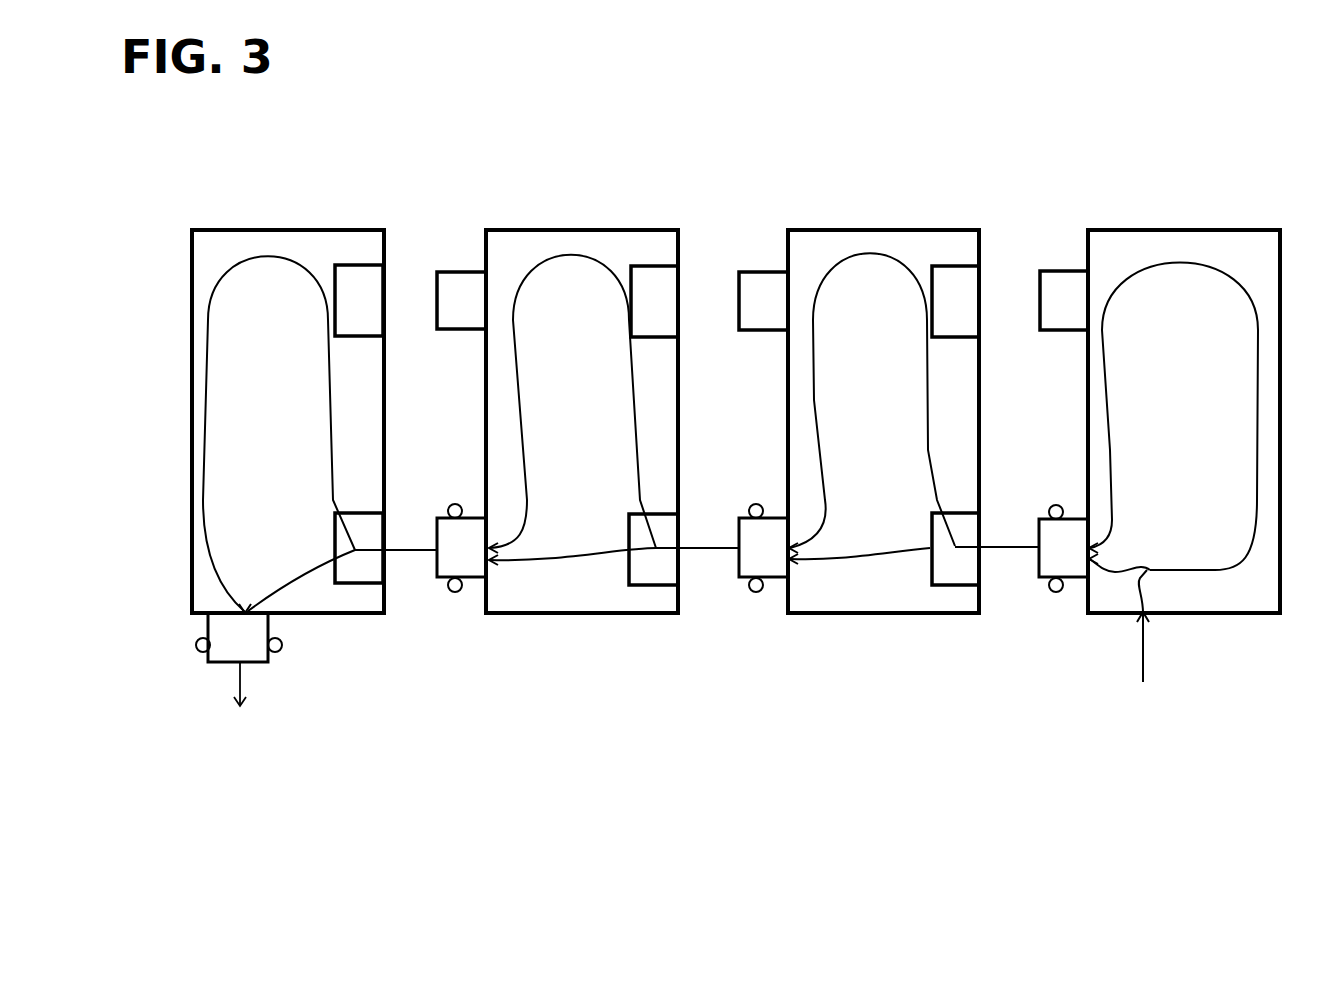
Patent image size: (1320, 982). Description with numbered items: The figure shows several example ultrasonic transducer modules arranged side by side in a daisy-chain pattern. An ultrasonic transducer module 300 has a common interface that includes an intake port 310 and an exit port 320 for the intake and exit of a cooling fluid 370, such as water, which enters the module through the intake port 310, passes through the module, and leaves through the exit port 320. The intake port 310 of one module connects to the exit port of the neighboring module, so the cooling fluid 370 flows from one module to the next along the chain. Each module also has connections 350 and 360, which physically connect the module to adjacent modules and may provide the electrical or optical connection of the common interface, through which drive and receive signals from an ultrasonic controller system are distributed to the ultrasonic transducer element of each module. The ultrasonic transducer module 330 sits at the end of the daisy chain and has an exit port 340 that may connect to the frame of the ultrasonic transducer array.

The ultrasonic transducer module 300 is at (521, 617).
The intake port 310 is at (650, 589).
The exit port 320 is at (443, 582).
The ultrasonic transducer module 330 is at (333, 617).
The exit port 340 is at (213, 664).
The connection 350 is at (659, 341).
The connection 360 is at (447, 334).
The cooling fluid 370 is at (1183, 573).